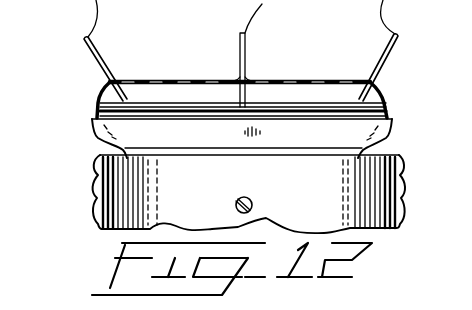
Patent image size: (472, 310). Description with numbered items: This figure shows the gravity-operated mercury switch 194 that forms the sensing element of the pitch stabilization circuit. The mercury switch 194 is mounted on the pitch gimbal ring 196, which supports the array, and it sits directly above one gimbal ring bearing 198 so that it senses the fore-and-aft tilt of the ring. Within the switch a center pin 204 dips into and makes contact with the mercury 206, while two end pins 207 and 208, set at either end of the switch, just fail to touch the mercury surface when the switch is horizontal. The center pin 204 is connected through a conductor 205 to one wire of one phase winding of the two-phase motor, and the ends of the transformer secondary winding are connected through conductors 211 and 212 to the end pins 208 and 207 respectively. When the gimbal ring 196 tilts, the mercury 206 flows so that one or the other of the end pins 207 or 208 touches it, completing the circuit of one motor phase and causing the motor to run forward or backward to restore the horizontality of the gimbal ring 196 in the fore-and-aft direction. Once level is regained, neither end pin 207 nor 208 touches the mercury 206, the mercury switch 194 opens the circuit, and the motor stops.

The mercury switch 194 is at (303, 64).
The pitch gimbal ring 196 is at (99, 177).
The gimbal ring bearing 198 is at (252, 211).
The center pin 204 is at (240, 63).
The conductor 205 is at (248, 19).
The mercury 206 is at (207, 108).
The end pin 207 is at (98, 63).
The end pin 208 is at (385, 64).
The conductor 211 is at (380, 17).
The conductor 212 is at (97, 13).